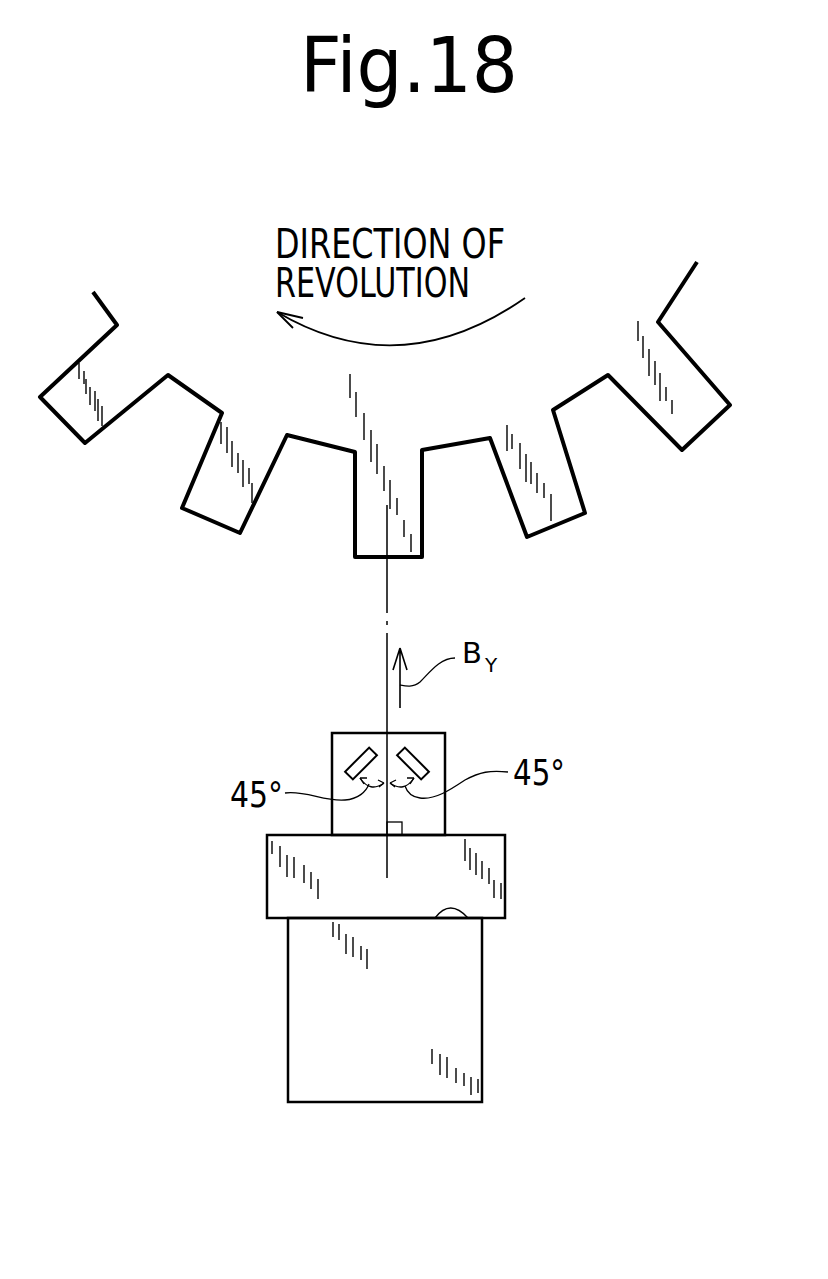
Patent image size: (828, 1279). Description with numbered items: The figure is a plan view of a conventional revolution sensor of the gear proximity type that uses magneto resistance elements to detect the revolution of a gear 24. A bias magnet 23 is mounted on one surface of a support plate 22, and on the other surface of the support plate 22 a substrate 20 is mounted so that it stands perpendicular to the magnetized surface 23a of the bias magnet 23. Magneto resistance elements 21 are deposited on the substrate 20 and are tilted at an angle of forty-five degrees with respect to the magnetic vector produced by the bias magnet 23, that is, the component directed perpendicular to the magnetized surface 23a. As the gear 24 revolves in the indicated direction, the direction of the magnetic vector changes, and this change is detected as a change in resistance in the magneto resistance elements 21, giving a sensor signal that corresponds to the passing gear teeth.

The substrate 20 is at (445, 812).
The magneto resistance elements 21 is at (361, 752).
The support plate 22 is at (505, 875).
The bias magnet 23 is at (482, 1023).
The magnetized surface 23a is at (468, 918).
The gear 24 is at (537, 537).